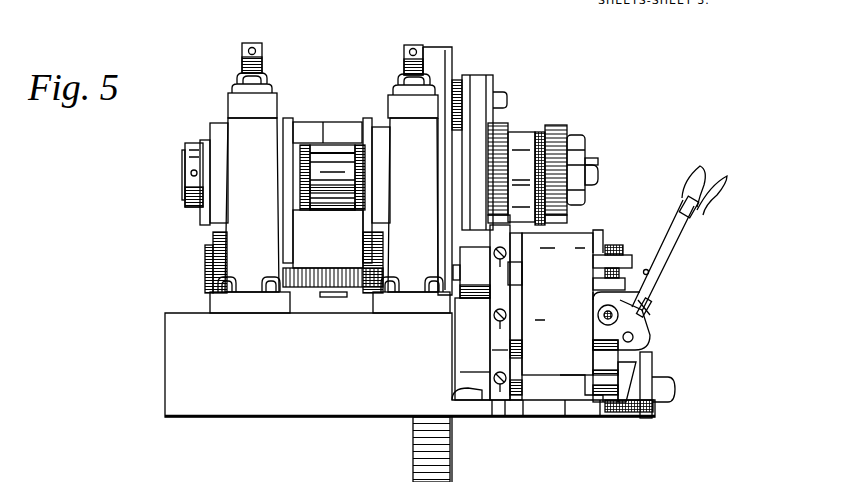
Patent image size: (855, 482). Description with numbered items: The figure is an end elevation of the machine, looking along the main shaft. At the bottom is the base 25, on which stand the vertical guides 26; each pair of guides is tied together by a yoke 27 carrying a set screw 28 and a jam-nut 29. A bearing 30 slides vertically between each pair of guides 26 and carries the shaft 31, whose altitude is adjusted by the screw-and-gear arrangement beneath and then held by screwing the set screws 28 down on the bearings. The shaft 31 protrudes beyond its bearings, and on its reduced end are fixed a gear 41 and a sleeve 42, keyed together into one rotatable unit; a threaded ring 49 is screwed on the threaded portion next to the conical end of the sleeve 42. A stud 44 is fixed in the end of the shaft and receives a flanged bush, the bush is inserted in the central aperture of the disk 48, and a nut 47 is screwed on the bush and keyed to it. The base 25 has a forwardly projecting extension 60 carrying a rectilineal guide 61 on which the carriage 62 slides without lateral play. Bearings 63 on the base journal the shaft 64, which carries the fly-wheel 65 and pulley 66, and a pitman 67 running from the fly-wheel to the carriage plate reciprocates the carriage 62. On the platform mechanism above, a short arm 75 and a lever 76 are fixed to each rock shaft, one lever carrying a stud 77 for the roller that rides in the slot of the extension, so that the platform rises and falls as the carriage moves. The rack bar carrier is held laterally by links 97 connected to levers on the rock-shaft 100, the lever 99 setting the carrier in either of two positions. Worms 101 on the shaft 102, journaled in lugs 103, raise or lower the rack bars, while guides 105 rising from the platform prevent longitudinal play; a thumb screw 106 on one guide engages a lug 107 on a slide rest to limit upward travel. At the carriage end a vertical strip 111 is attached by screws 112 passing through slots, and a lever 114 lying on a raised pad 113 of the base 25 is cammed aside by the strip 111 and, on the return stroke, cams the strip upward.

The base 25 is at (235, 355).
The vertical guides 26 is at (376, 125).
The yoke 27 is at (383, 133).
The set screw 28 is at (410, 45).
The jam-nut 29 is at (235, 78).
The bearing 30 is at (297, 203).
The shaft 31 is at (183, 168).
The gear 41 is at (507, 128).
The sleeve 42 is at (523, 135).
The stud 44 is at (598, 175).
The nut 47 is at (597, 168).
The disk 48 is at (575, 168).
The threaded ring 49 is at (547, 135).
The extension 60 is at (645, 417).
The rectilineal guide 61 is at (572, 392).
The carriage 62 is at (526, 402).
The bearings 63 is at (213, 240).
The shaft 64 is at (205, 265).
The fly-wheel 65 is at (430, 430).
The pulley 66 is at (355, 112).
The pitman 67 is at (477, 85).
The short arm 75 is at (512, 350).
The lever 76 is at (645, 362).
The stud 77 is at (672, 395).
The links 97 is at (642, 247).
The lever 99 is at (670, 232).
The rock-shaft 100 is at (648, 335).
The worms 101 is at (598, 295).
The shaft 102 is at (598, 318).
The lugs 103 is at (668, 318).
The guides 105 is at (597, 240).
The thumb screw 106 is at (600, 258).
The lug 107 is at (652, 298).
The vertical strip 111 is at (498, 358).
The screws 112 is at (477, 372).
The pad 113 is at (458, 398).
The lever 114 is at (503, 420).